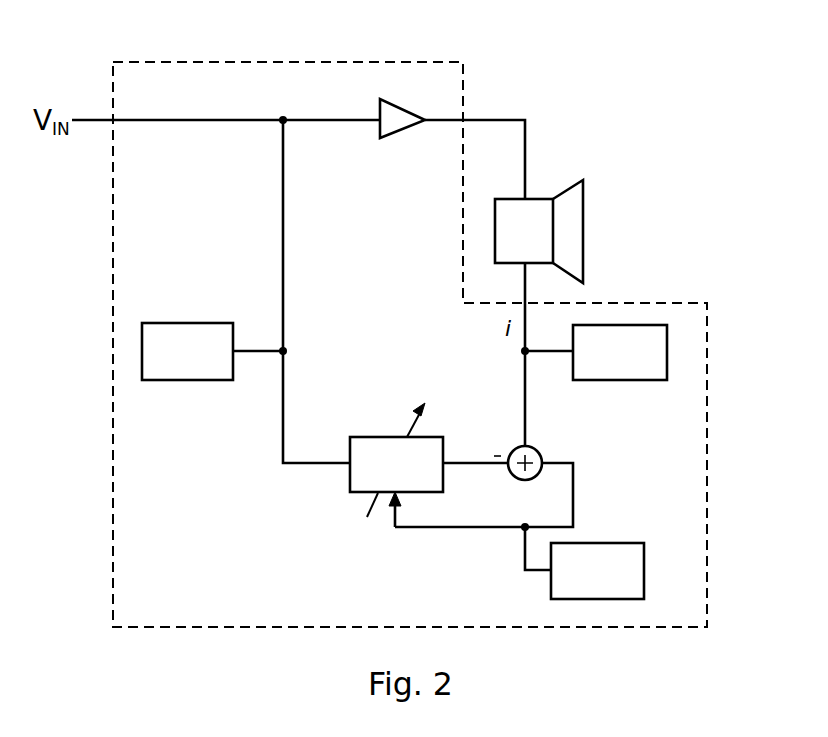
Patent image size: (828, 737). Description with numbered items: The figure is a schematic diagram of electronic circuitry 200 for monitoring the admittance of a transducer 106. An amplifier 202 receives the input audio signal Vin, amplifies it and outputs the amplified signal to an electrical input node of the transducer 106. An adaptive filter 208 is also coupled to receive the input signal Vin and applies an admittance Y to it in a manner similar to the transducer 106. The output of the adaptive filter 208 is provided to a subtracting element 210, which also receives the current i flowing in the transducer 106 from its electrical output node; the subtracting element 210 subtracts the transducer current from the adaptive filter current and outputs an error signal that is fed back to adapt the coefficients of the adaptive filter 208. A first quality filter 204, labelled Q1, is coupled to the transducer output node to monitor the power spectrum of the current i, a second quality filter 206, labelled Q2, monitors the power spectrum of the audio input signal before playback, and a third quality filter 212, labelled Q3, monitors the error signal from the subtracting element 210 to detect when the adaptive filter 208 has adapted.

The electronic circuitry 200 is at (448, 63).
The amplifier 202 is at (380, 138).
The transducer 106 is at (567, 183).
The first quality filter 204 is at (650, 323).
The second quality filter 206 is at (213, 322).
The adaptive filter 208 is at (388, 435).
The subtracting element 210 is at (535, 447).
The third quality filter 212 is at (620, 542).